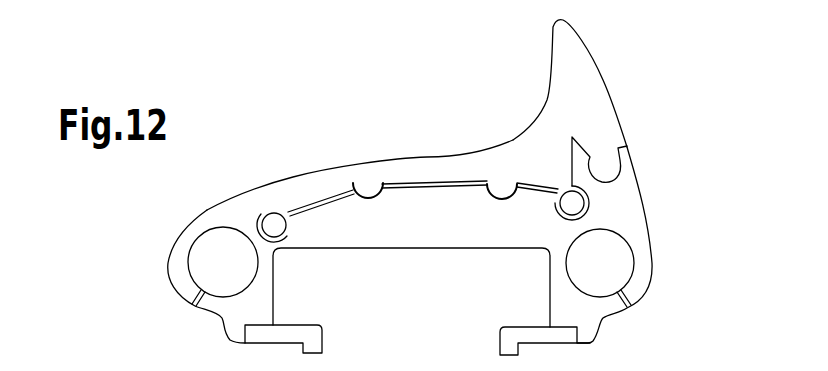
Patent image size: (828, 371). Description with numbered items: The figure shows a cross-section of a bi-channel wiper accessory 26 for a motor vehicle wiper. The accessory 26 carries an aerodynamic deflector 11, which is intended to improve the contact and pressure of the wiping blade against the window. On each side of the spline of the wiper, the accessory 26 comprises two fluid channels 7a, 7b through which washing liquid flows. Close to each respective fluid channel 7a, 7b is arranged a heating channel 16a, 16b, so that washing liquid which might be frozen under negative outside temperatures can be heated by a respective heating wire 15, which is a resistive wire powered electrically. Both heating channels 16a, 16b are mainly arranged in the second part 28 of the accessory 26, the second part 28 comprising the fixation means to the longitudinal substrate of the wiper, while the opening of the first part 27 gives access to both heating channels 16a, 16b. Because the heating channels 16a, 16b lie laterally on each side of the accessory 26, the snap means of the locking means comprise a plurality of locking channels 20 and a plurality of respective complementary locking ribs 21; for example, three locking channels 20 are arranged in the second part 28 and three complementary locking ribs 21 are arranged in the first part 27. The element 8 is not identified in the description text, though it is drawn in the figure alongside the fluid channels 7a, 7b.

The aerodynamic deflector 11 is at (578, 67).
The accessory 26 is at (284, 140).
The first part 27 is at (544, 135).
The locking ribs 21 is at (368, 195).
The locking channels 20 is at (607, 175).
The heating wire 15 is at (270, 227).
The first heating channel 16a is at (287, 218).
The second heating channel 16b is at (557, 200).
The first fluid channel 7a is at (202, 257).
The second fluid channel 7b is at (622, 262).
The slots 8 is at (198, 303).
The second part 28 is at (423, 247).